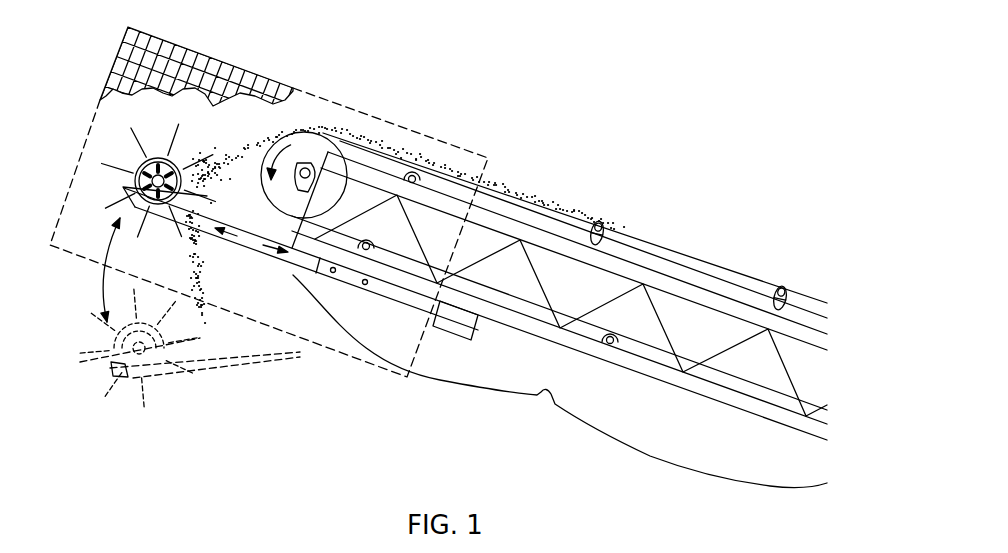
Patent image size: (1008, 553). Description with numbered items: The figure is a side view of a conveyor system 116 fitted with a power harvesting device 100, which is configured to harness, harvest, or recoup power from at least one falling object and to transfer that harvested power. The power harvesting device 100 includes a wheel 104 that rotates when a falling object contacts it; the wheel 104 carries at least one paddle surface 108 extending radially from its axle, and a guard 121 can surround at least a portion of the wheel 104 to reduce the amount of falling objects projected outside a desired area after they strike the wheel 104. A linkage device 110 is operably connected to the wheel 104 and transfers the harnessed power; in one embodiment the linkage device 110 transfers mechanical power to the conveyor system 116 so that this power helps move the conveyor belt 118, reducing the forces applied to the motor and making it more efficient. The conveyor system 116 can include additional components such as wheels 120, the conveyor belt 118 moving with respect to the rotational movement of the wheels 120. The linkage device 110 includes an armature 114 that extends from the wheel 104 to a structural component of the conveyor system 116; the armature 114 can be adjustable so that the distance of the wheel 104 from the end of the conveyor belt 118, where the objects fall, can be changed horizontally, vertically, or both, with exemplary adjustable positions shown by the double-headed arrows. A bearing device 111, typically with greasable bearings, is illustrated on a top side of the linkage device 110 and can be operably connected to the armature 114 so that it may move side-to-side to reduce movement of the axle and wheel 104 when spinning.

The power harvesting device 100 is at (655, 173).
The wheel 104 is at (122, 146).
The paddle surface 108 is at (138, 152).
The linkage device 110 is at (258, 262).
The bearing device 111 is at (124, 185).
The armature 114 is at (368, 298).
The conveyor system 116 is at (560, 381).
The conveyor belt 118 is at (712, 258).
The wheels 120 is at (606, 231).
The guard 121 is at (256, 70).